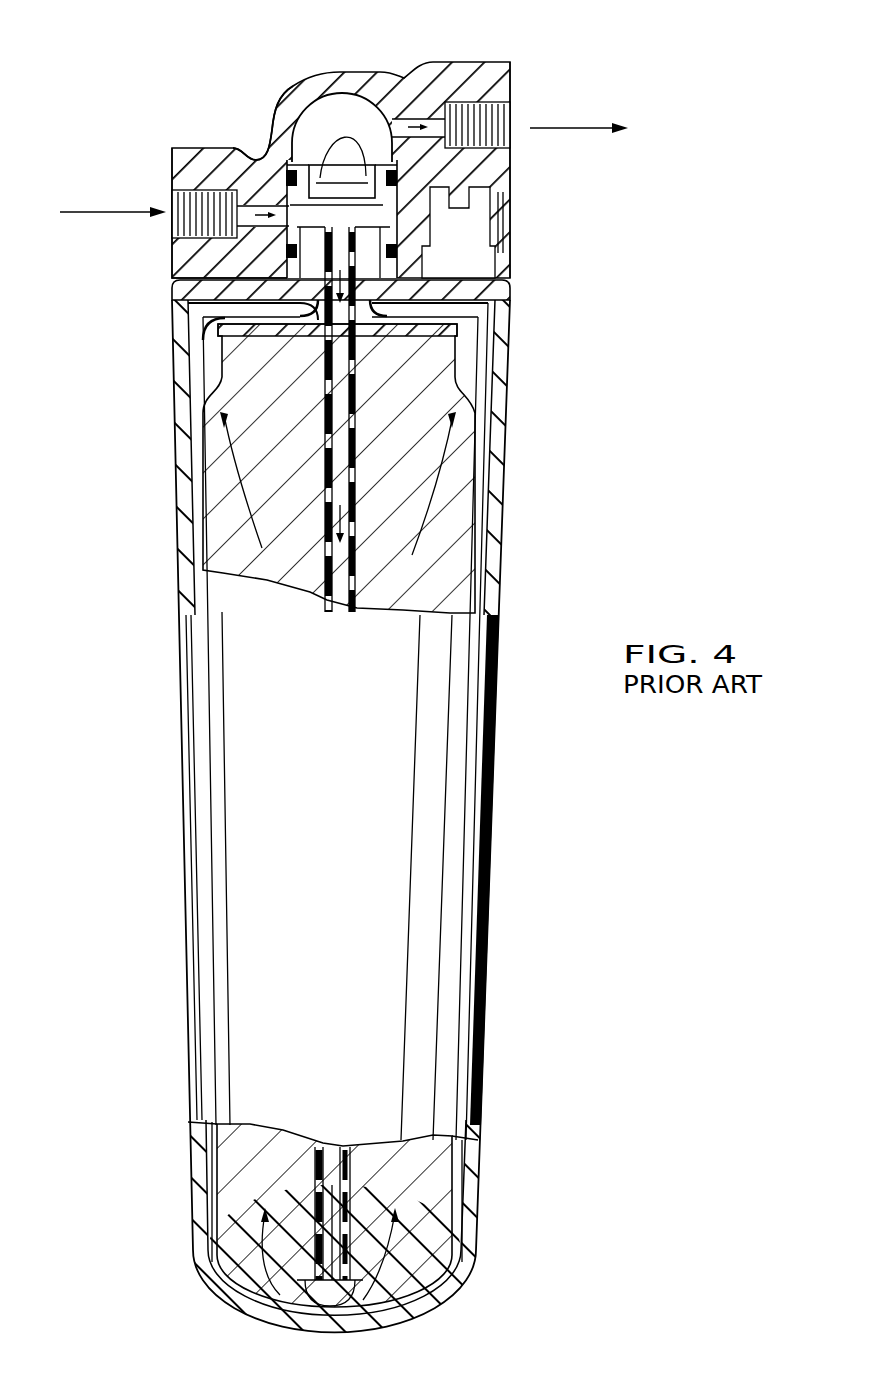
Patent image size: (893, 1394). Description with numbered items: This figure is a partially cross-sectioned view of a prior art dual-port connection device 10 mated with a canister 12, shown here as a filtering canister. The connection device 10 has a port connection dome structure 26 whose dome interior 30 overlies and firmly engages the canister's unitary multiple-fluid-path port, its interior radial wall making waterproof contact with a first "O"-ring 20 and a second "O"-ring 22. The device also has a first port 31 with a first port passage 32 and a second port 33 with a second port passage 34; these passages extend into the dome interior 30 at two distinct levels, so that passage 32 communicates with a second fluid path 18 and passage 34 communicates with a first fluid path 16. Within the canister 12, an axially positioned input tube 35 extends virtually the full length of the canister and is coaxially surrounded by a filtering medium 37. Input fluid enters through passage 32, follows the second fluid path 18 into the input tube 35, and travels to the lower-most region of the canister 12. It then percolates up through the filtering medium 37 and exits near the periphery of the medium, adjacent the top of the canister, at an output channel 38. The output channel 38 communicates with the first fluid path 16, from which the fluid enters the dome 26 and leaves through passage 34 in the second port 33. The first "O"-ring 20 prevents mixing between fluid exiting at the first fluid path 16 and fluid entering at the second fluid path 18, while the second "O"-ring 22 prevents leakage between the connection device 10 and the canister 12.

The dual-port connection device 10 is at (262, 128).
The canister 12 is at (178, 530).
The first fluid path 16 is at (337, 186).
The second fluid path 18 is at (367, 214).
The first "O"-ring 20 is at (250, 197).
The second "O"-ring 22 is at (190, 322).
The port connection dome structure 26 is at (300, 134).
The dome interior 30 is at (300, 92).
The first port 31 is at (172, 167).
The first port passage 32 is at (180, 230).
The second port 33 is at (470, 60).
The second port passage 34 is at (510, 120).
The input tube 35 is at (342, 405).
The filtering medium 37 is at (240, 1163).
The output channel 38 is at (468, 385).